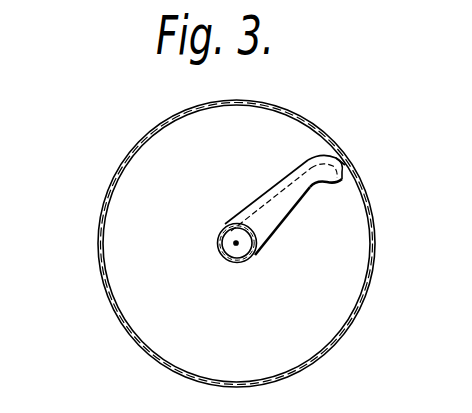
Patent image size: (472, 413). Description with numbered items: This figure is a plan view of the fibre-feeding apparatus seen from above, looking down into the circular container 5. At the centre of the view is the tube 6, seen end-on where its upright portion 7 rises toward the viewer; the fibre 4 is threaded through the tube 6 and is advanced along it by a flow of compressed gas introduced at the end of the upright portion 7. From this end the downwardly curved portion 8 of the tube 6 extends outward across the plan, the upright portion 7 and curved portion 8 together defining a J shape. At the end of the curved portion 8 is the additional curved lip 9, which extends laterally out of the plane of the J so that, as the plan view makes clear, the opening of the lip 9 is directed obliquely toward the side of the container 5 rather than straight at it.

The fibre 4 is at (236, 243).
The container 5 is at (368, 288).
The tube 6 is at (237, 277).
The upright portion 7 is at (218, 240).
The downwardly curved portion 8 is at (272, 212).
The curved lip 9 is at (342, 163).